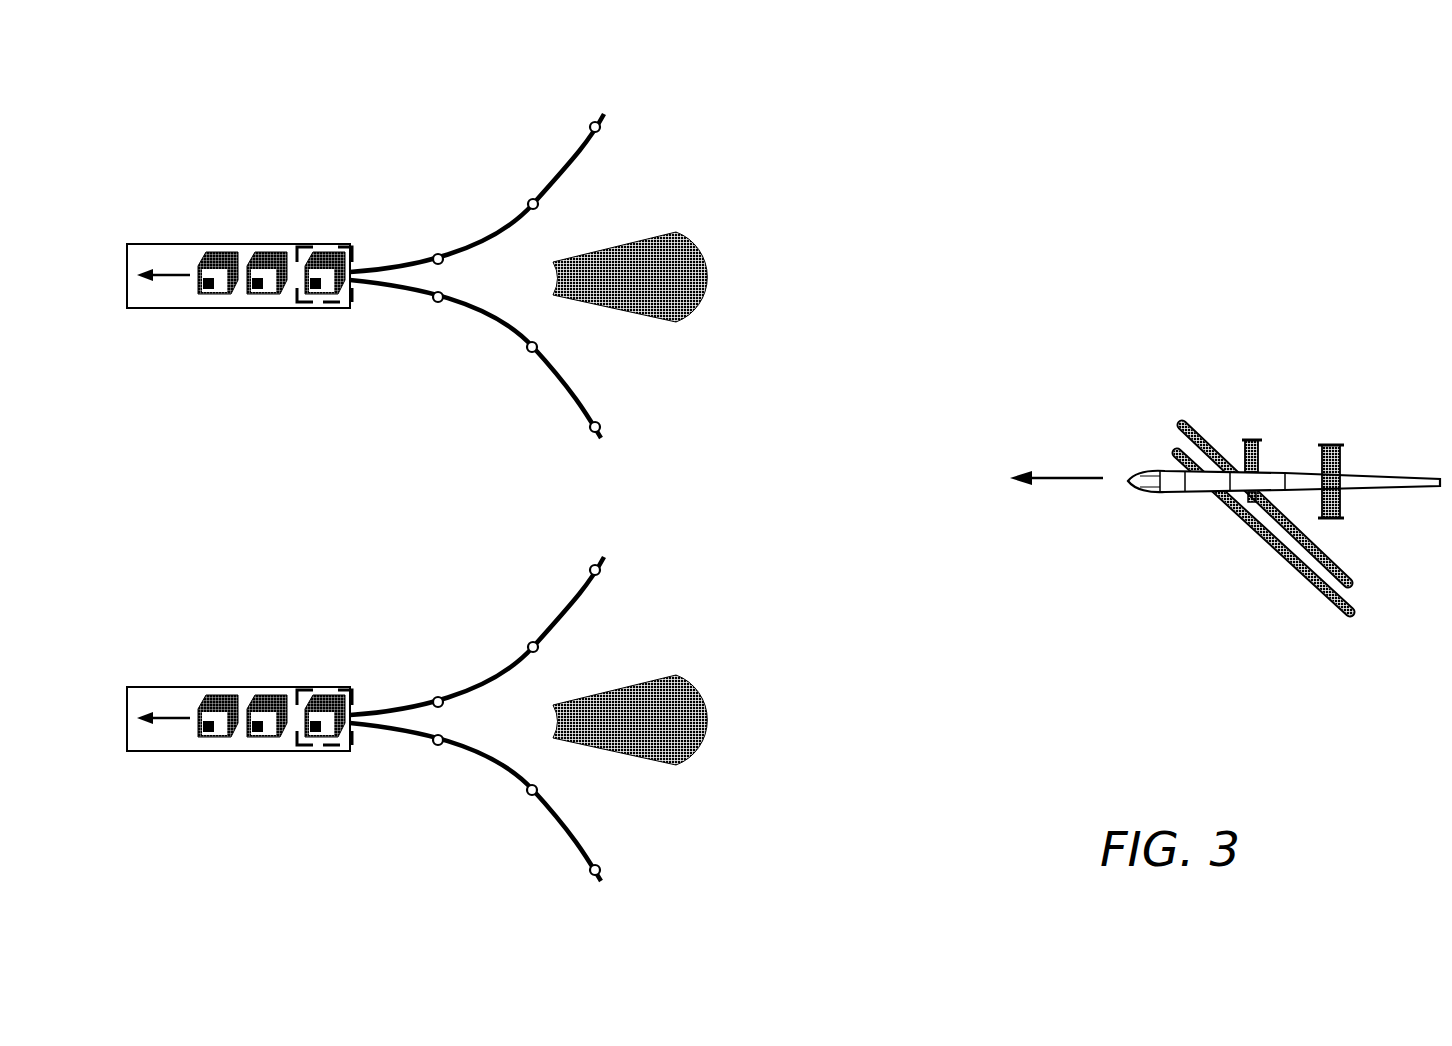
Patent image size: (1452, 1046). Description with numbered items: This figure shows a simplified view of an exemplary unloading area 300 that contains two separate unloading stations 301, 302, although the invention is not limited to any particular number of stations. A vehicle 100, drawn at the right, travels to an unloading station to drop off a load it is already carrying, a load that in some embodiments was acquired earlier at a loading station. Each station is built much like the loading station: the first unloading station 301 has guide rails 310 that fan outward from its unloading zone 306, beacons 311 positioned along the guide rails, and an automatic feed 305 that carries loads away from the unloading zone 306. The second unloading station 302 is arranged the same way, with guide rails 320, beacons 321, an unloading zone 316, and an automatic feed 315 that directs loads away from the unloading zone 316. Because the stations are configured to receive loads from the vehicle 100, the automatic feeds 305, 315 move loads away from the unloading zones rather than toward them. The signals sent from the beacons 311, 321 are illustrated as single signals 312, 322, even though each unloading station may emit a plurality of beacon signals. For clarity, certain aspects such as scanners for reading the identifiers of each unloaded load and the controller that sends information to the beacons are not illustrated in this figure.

The vehicle 100 is at (1346, 618).
The unloading area 300 is at (1238, 152).
The unloading station 301 is at (301, 172).
The unloading station 302 is at (310, 860).
The automatic feed 305 is at (135, 310).
The unloading zone 306 is at (333, 310).
The guide rails 310 is at (420, 262).
The beacons 311 is at (438, 253).
The signal 312 is at (678, 325).
The automatic feed 315 is at (238, 748).
The unloading zone 316 is at (331, 750).
The guide rails 320 is at (477, 719).
The beacons 321 is at (526, 726).
The signal 322 is at (630, 751).